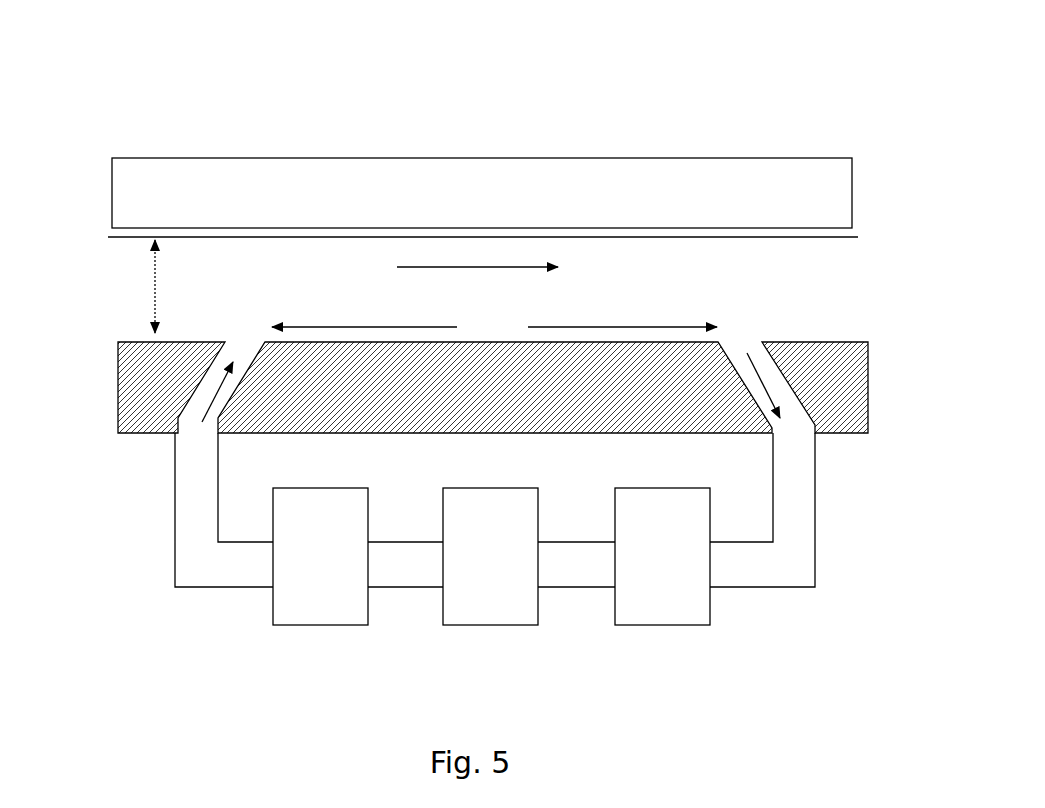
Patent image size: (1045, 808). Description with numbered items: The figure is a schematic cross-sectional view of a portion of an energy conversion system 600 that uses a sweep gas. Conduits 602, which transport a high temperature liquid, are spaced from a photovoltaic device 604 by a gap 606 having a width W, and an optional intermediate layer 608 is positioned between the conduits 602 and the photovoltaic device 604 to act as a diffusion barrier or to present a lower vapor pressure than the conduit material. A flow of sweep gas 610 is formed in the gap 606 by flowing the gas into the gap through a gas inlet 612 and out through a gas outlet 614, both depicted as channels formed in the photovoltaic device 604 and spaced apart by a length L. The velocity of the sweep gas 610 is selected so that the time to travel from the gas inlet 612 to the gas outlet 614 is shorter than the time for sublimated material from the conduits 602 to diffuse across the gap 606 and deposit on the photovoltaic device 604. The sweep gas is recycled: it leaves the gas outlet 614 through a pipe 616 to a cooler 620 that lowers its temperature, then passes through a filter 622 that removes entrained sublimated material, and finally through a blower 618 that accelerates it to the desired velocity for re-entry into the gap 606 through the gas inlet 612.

The energy conversion system 600 is at (732, 83).
The conduits 602 is at (238, 158).
The photovoltaic device 604 is at (148, 397).
The gap 606 is at (830, 265).
The intermediate layer 608 is at (843, 237).
The sweep gas 610 is at (477, 254).
The gas inlet 612 is at (237, 342).
The gas outlet 614 is at (740, 338).
The pipe 616 is at (810, 512).
The blower 618 is at (297, 575).
The cooler 620 is at (638, 575).
The filter 622 is at (466, 575).